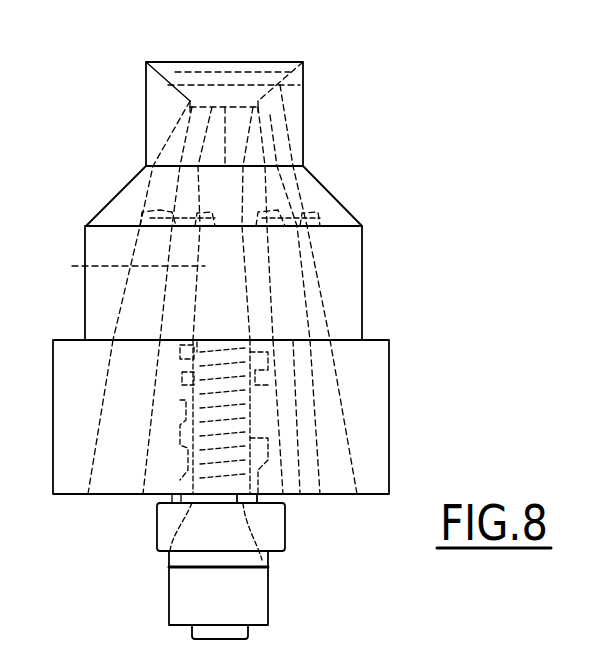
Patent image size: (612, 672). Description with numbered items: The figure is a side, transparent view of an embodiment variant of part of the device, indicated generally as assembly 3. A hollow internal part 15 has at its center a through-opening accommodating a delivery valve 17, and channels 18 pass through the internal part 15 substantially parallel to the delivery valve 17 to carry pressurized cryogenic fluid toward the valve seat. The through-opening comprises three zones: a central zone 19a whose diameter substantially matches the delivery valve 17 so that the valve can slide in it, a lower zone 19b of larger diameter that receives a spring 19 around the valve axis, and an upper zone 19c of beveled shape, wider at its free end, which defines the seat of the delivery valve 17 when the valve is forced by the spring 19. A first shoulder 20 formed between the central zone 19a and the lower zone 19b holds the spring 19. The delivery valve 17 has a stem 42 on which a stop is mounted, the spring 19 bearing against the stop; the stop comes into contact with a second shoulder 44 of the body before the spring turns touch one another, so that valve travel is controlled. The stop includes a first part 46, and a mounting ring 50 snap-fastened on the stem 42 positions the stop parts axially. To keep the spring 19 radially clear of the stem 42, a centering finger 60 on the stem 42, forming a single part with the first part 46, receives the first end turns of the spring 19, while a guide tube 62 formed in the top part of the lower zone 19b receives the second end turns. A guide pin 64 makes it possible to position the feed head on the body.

The magnet assembly 3 is at (430, 398).
The internal part 15 is at (362, 295).
The delivery valve 17 is at (232, 210).
The channels 18 is at (345, 458).
The spring 19 is at (187, 397).
The central zone 19a is at (265, 290).
The lower zone 19b is at (275, 425).
The upper zone 19c is at (300, 86).
The first shoulder 20 is at (185, 336).
The stem 42 is at (121, 267).
The second shoulder 44 is at (300, 532).
The first part 46 is at (191, 506).
The mounting ring 50 is at (260, 607).
The centering finger 60 is at (182, 468).
The guide tube 62 is at (104, 365).
The guide pin 64 is at (258, 565).